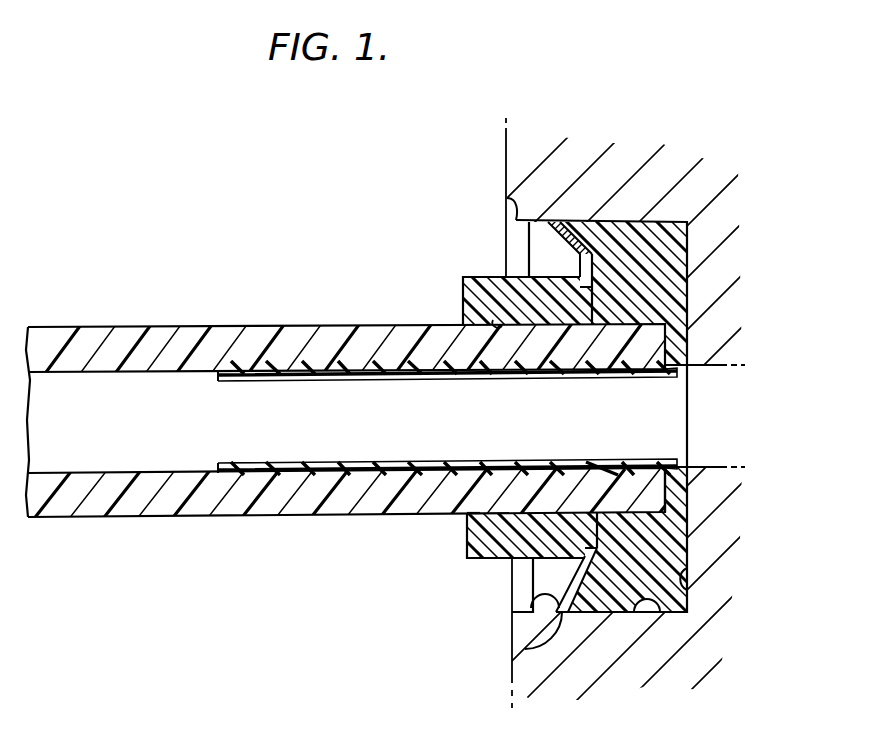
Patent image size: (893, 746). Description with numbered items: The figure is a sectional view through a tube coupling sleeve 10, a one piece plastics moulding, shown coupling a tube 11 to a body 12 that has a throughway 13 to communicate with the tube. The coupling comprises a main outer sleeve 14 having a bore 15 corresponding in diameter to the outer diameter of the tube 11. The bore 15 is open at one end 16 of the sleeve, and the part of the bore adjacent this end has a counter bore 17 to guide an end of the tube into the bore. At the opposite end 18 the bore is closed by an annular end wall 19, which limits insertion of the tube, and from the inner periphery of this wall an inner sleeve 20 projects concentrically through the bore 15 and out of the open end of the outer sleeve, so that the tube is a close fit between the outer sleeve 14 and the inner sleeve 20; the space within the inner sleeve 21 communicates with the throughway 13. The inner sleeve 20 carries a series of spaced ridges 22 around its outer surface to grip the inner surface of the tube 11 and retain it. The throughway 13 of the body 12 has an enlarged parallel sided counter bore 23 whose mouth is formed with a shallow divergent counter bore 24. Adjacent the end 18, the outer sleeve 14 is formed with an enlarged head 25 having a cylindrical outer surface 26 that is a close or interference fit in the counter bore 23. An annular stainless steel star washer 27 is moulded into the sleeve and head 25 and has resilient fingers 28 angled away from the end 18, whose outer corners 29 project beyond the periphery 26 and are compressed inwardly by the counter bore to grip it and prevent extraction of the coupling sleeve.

The tube coupling sleeve 10 is at (501, 378).
The tube 11 is at (369, 391).
The body 12 is at (507, 166).
The throughway 13 is at (689, 366).
The main outer sleeve 14 is at (463, 284).
The bore 15 is at (496, 326).
The one end of the sleeve 16 is at (467, 540).
The counter bore 17 is at (468, 520).
The opposite end of the sleeve 18 is at (501, 369).
The annular end wall 19 is at (677, 494).
The inner sleeve 20 is at (602, 377).
The tube passage 21 is at (218, 432).
The ridges 22 is at (233, 370).
The counter bore 23 is at (540, 222).
The divergent counter bore 24 is at (507, 200).
The enlarged head 25 is at (675, 578).
The cylindrical outer surface 26 is at (705, 622).
The star washer 27 is at (583, 562).
The resilient fingers 28 is at (533, 598).
The outer corners 29 is at (533, 641).